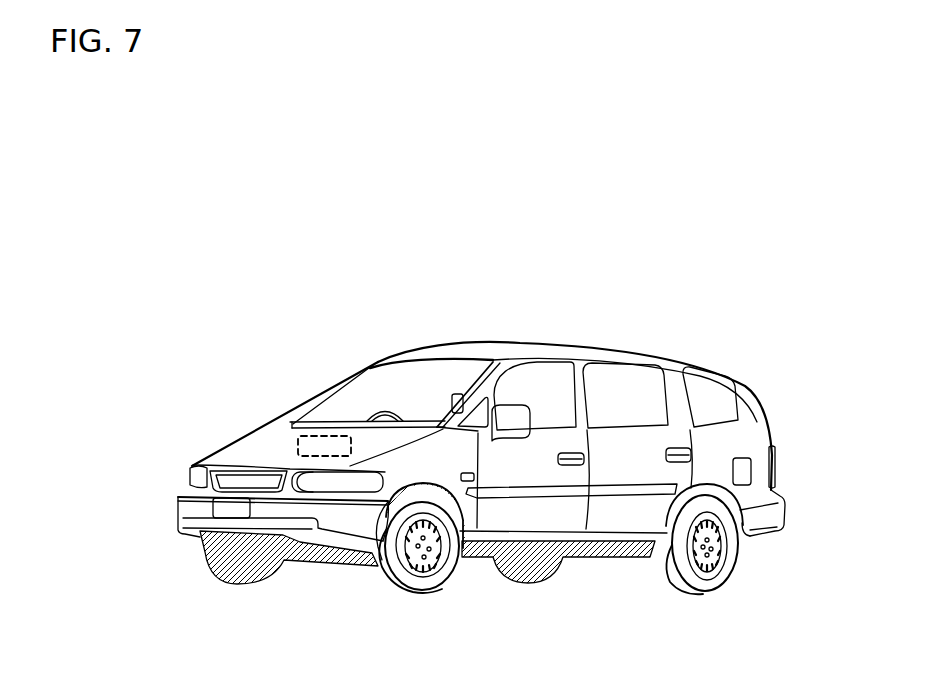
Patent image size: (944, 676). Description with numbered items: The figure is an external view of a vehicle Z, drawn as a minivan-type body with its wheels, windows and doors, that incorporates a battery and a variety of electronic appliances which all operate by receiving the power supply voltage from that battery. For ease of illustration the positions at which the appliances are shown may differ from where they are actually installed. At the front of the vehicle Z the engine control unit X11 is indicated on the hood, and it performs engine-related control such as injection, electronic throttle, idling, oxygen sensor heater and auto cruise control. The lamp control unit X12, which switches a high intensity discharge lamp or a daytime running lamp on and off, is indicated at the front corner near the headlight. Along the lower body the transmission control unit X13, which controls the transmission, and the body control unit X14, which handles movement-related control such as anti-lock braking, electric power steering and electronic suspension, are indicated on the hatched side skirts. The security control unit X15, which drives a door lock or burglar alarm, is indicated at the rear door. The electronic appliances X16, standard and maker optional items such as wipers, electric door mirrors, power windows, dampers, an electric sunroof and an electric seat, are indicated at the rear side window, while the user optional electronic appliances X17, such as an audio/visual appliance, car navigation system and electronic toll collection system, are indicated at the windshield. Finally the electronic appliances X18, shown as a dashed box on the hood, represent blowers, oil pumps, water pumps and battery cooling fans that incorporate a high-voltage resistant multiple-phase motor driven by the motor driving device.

The vehicle Z is at (160, 301).
The engine control unit X11 is at (240, 446).
The lamp control unit X12 is at (192, 466).
The transmission control unit X13 is at (366, 553).
The body control unit X14 is at (643, 556).
The security control unit X15 is at (692, 457).
The electronic appliances (standard and maker optional items) X16 is at (633, 380).
The electronic appliances (user optional items) X17 is at (413, 411).
The electronic appliances (multiple-phase motor appliances) X18 is at (301, 436).